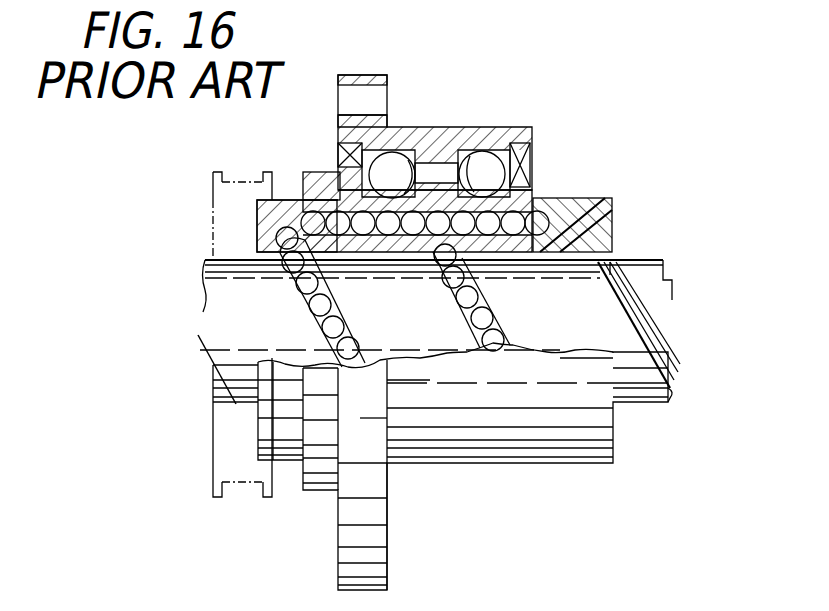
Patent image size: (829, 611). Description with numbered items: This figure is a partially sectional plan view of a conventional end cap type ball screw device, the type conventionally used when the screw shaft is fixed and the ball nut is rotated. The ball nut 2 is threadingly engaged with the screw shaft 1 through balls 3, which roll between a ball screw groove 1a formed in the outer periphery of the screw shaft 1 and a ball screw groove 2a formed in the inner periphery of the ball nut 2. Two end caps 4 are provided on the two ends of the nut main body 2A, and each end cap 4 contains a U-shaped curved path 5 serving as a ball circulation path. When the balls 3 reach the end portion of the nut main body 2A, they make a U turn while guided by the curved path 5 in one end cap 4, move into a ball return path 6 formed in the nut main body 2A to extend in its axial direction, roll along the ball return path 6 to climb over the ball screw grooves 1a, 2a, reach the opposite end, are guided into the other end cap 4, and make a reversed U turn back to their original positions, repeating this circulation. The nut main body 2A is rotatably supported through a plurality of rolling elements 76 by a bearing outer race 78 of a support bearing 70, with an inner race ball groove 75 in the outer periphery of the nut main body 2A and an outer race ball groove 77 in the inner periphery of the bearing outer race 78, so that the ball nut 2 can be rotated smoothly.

The screw shaft 1 is at (640, 272).
The ball screw groove 1a is at (640, 316).
The ball nut 2 is at (310, 500).
The ball screw groove 2a is at (440, 262).
The nut main body 2A is at (540, 197).
The balls 3 is at (490, 322).
The end cap 4 is at (582, 208).
The curved path 5 is at (280, 230).
The ball return path 6 is at (337, 196).
The support bearing 70 is at (443, 116).
The inner race ball groove 75 is at (488, 178).
The rolling elements 76 is at (340, 143).
The outer race ball groove 77 is at (388, 160).
The bearing outer race 78 is at (464, 130).